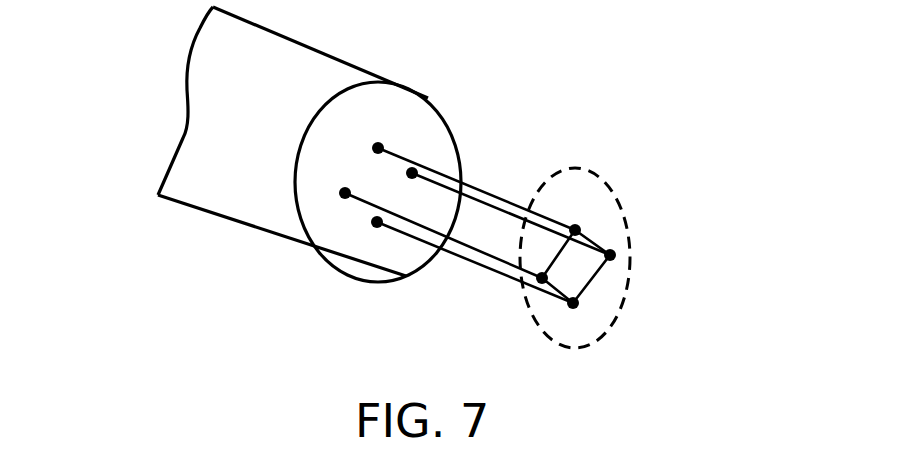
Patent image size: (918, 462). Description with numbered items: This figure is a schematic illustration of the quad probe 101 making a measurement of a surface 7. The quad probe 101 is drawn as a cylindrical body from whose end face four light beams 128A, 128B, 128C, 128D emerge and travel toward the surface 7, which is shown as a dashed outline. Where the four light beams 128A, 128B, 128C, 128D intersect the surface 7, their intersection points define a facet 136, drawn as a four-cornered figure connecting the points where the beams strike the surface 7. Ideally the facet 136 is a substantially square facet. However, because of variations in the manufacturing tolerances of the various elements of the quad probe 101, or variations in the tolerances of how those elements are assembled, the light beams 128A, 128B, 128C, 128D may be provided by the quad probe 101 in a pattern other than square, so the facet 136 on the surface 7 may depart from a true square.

The quad probe 101 is at (148, 234).
The light beam 128A is at (483, 192).
The light beam 128B is at (506, 216).
The light beam 128C is at (497, 273).
The light beam 128D is at (467, 243).
The facet 136 is at (578, 272).
The surface 7 is at (612, 223).